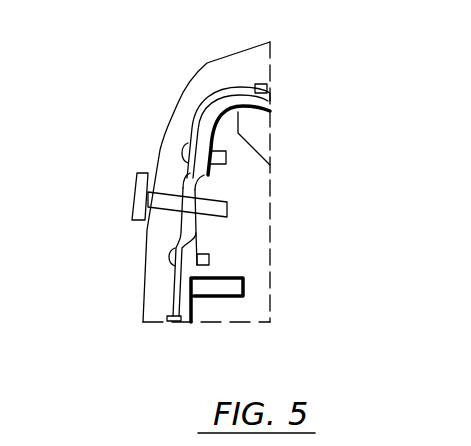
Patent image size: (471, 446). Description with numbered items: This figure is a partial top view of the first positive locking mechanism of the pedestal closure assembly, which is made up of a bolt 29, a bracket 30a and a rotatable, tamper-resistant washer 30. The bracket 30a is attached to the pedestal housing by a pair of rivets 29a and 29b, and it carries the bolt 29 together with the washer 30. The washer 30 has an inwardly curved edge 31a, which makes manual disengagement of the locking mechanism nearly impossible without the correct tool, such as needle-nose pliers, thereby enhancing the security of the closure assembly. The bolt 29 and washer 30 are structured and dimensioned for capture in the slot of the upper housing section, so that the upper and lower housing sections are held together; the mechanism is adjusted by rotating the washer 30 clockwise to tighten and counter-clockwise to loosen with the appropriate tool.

The bolt 29 is at (170, 194).
The rivet 29a is at (227, 157).
The rivet 29b is at (208, 258).
The tamper-resistant washer 30 is at (138, 174).
The bracket 30a is at (190, 173).
The inwardly curved edge 31a is at (131, 211).